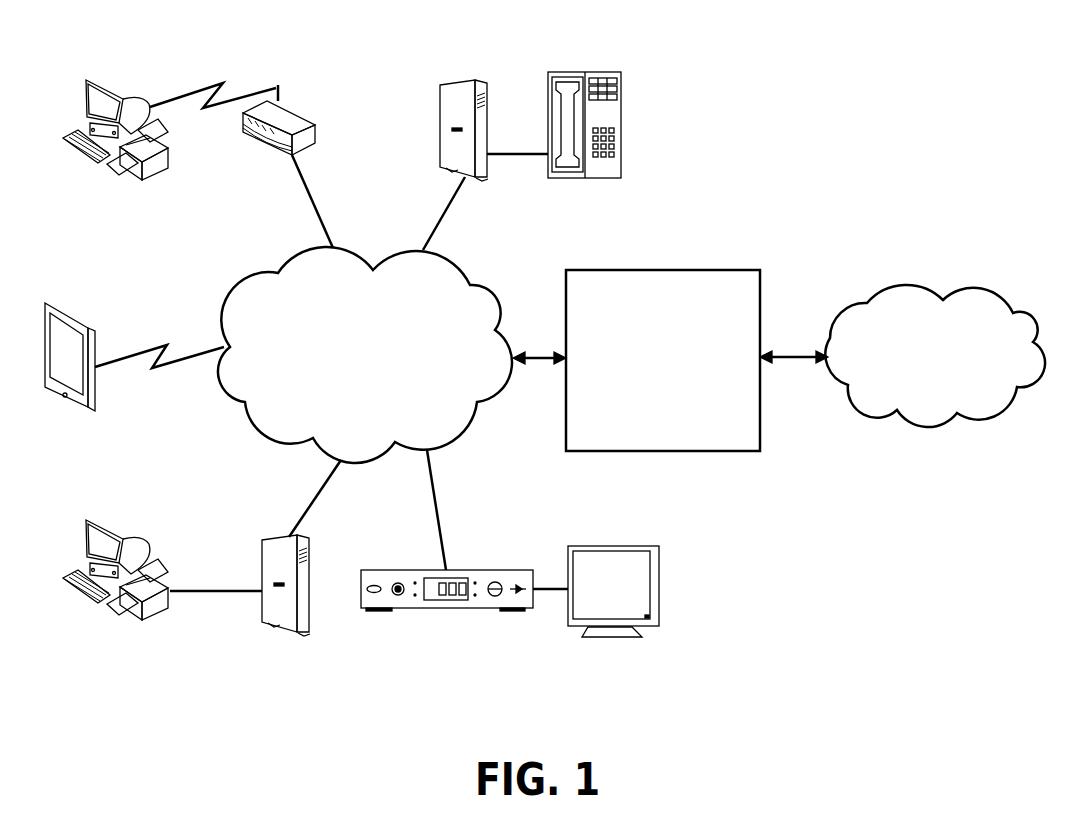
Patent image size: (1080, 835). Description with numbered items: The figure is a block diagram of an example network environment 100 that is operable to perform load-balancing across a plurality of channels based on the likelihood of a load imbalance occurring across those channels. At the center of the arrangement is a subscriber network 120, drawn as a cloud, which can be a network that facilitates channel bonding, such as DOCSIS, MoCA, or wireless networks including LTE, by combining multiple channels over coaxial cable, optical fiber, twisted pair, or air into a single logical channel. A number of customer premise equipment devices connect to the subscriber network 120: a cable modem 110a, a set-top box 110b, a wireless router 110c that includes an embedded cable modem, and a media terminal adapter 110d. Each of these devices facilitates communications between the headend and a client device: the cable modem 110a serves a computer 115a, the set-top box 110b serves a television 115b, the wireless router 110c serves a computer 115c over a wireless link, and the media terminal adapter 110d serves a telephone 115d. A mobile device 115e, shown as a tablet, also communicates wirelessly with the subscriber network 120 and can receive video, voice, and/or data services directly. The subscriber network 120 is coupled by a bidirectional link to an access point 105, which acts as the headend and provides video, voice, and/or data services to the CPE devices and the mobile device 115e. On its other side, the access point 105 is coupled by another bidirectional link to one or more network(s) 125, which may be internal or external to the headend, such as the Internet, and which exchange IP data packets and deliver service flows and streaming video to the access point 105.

The network environment 100 is at (968, 651).
The access point 105 is at (712, 268).
The cable modem 110a is at (288, 637).
The set-top box 110b is at (440, 610).
The wireless router 110c is at (307, 122).
The media terminal adapter 110d is at (468, 80).
The computer 115a is at (100, 522).
The television 115b is at (620, 545).
The computer 115c is at (100, 78).
The telephone 115d is at (612, 70).
The mobile device 115e is at (78, 314).
The subscriber network 120 is at (297, 448).
The network(s) 125 is at (923, 430).